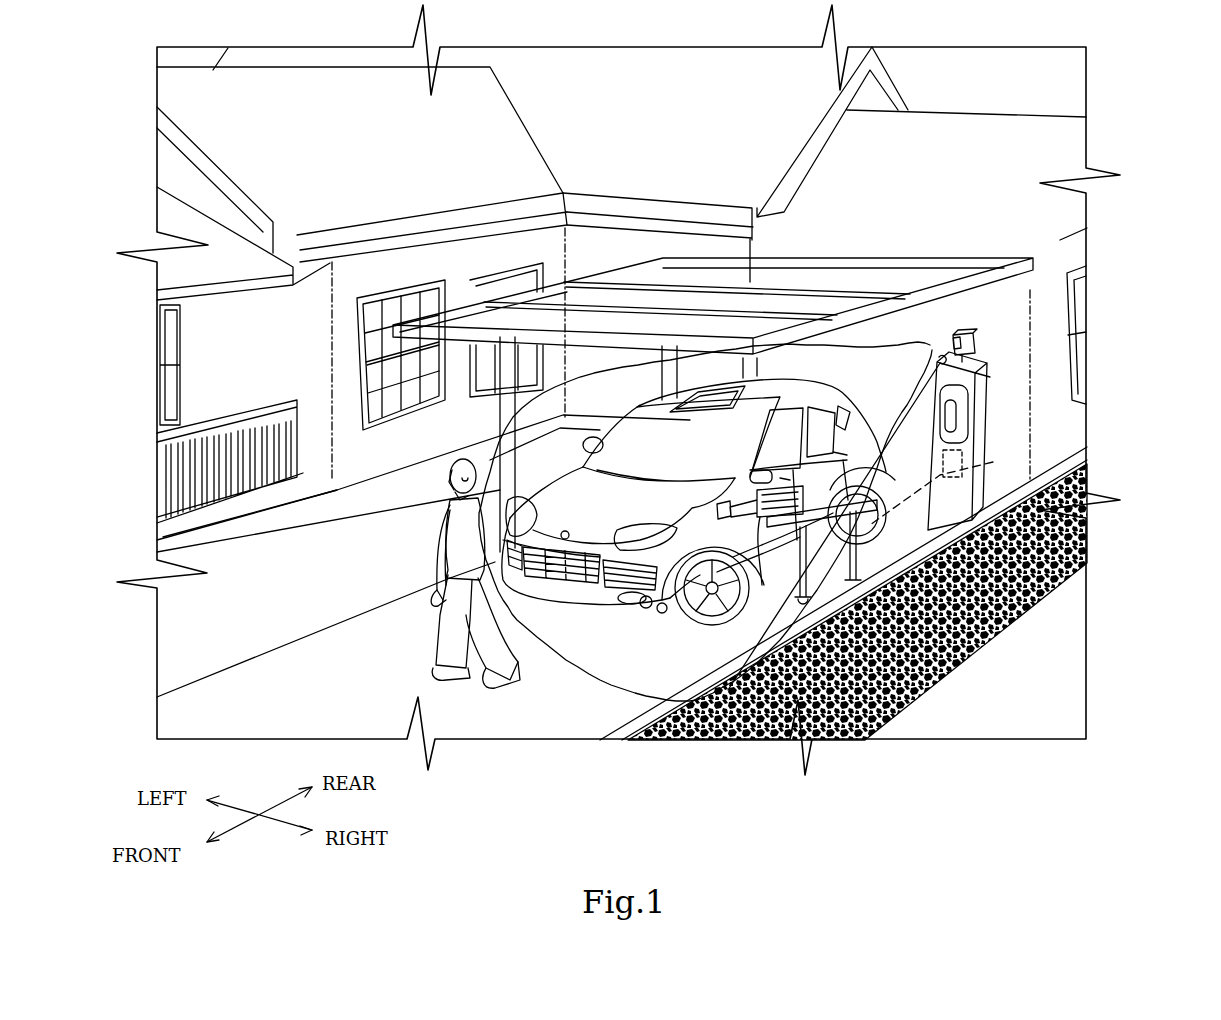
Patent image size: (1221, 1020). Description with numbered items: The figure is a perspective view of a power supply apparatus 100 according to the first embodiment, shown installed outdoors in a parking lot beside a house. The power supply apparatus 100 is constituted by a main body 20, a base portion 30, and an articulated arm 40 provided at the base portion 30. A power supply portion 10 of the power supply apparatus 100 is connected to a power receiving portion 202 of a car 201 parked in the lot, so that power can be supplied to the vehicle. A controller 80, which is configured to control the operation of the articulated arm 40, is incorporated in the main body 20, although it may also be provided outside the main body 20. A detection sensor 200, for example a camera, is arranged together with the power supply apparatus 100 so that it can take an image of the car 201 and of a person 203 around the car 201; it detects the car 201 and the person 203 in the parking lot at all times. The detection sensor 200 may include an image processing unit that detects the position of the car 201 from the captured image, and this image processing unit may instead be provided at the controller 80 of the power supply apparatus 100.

The power supply portion 10 is at (765, 497).
The main body 20 is at (985, 386).
The base portion 30 is at (952, 481).
The articulated arm 40 is at (872, 478).
The controller 80 is at (993, 462).
The power supply apparatus 100 is at (1061, 434).
The detection sensor 200 is at (977, 336).
The car 201 is at (655, 607).
The power receiving portion 202 is at (662, 614).
The person 203 is at (452, 533).